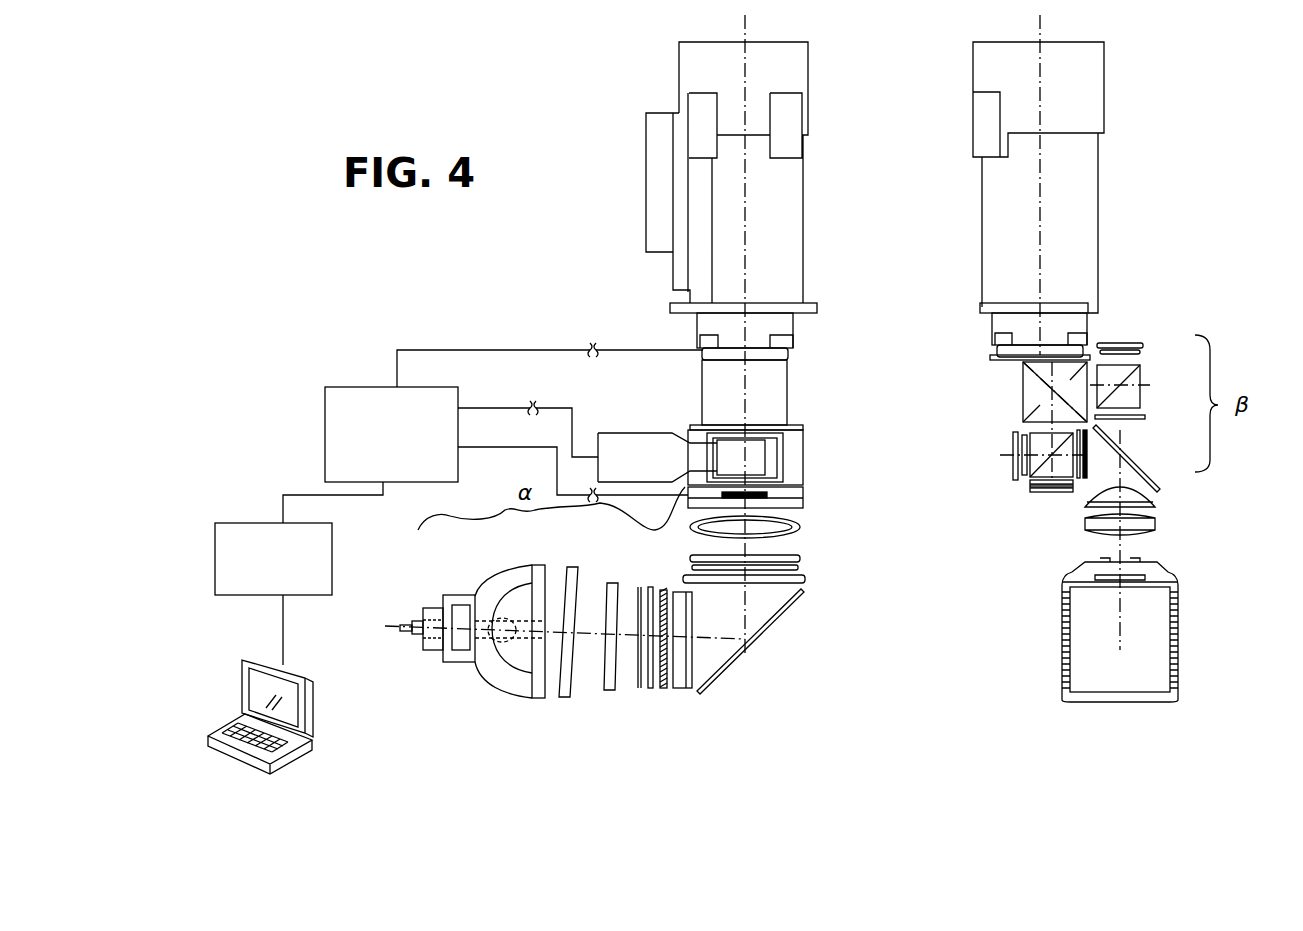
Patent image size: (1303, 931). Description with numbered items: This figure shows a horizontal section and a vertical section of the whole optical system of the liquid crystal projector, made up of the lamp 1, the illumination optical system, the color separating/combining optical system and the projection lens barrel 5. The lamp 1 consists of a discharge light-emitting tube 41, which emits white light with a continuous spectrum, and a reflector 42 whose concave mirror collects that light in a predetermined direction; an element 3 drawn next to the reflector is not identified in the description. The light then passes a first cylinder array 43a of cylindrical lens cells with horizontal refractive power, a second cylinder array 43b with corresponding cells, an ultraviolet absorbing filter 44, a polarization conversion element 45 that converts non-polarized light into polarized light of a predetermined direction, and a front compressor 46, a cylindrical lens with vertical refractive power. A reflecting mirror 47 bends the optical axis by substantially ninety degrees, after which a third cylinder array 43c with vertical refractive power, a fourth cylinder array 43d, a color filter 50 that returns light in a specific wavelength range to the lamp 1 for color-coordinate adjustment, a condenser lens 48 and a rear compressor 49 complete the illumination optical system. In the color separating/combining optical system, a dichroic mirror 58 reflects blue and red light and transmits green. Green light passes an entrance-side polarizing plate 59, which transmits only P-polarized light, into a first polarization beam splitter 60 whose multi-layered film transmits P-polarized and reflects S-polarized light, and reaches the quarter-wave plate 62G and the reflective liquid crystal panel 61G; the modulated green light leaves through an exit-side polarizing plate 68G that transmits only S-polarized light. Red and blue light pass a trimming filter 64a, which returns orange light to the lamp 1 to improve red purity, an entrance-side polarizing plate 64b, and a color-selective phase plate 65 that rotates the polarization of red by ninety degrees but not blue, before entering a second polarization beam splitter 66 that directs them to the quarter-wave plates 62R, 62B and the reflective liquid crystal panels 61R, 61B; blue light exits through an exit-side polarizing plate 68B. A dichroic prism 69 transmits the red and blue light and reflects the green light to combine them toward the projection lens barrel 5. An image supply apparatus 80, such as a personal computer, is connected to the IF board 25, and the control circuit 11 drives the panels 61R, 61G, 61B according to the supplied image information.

The lamp 1 is at (472, 632).
The lens array 3 is at (567, 697).
The projection lens barrel 5 is at (1095, 250).
The control circuit 11 is at (325, 398).
The IF board 25 is at (215, 560).
The discharge light-emitting tube 41 is at (478, 598).
The reflector 42 is at (498, 680).
The first cylinder array 43a is at (602, 690).
The second cylinder array 43b is at (653, 690).
The third cylinder array 43c is at (805, 580).
The fourth cylinder array 43d is at (801, 559).
The ultraviolet absorbing filter 44 is at (640, 688).
The polarization conversion element 45 is at (664, 690).
The front compressor 46 is at (692, 688).
The reflecting mirror 47 is at (735, 651).
The condenser lens 48 is at (800, 527).
The rear compressor 49 is at (800, 500).
The color filter 50 is at (805, 574).
The dichroic mirror 58 is at (1157, 492).
The entrance-side polarizing plate for G 59 is at (1147, 417).
The first polarization beam splitter 60 is at (1147, 385).
The reflective liquid crystal panel for B 61B is at (1012, 448).
The reflective liquid crystal panel for G 61G is at (1136, 346).
The reflective liquid crystal panel for R 61R is at (1035, 493).
The quarter-wave plate for B 62B is at (1020, 466).
The quarter-wave plate for G 62G is at (1142, 352).
The quarter-wave plate for R 62R is at (1032, 487).
The trimming filter 64a is at (1080, 470).
The entrance-side polarizing plate for R and B 64b is at (1087, 480).
The color-selective phase plate 65 is at (1073, 484).
The second polarization beam splitter 66 is at (1040, 443).
The exit-side polarizing plate for B 68B is at (1035, 417).
The exit-side polarizing plate for G 68G is at (1088, 360).
The dichroic prism 69 is at (1027, 387).
The image supply apparatus 80 is at (318, 707).